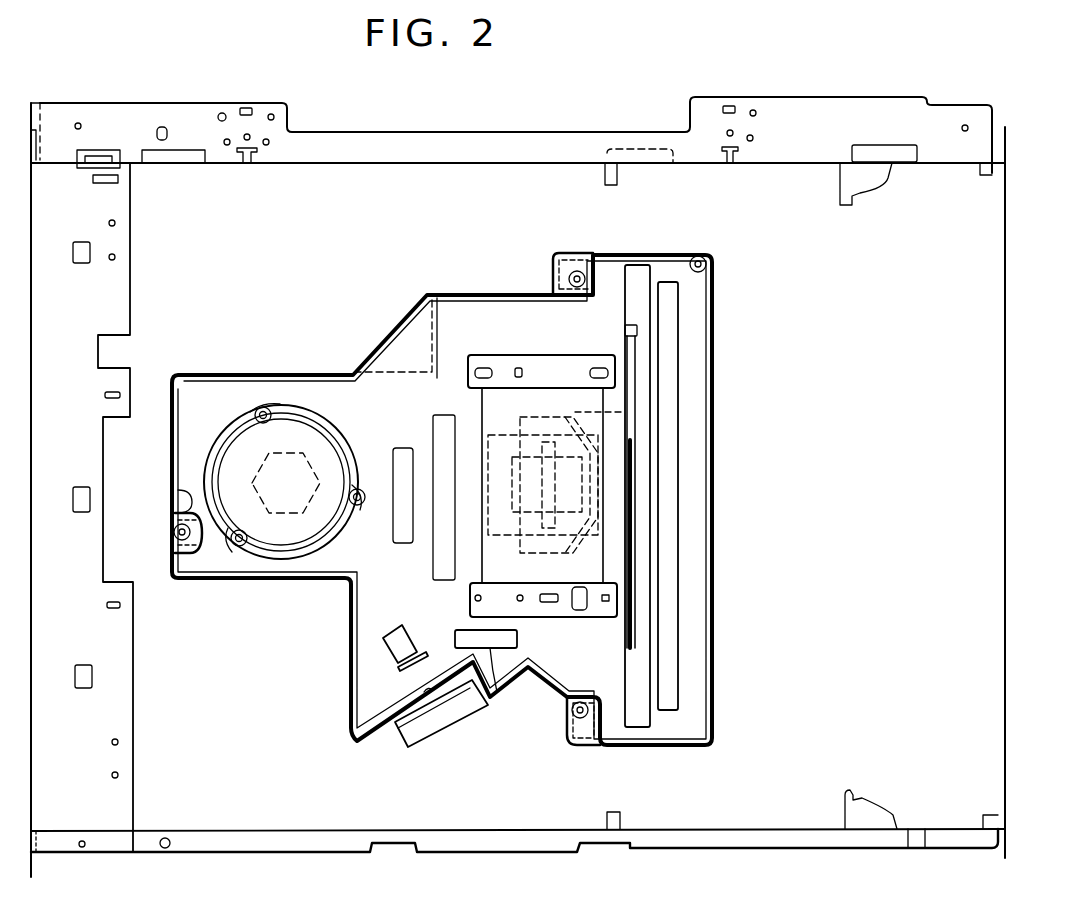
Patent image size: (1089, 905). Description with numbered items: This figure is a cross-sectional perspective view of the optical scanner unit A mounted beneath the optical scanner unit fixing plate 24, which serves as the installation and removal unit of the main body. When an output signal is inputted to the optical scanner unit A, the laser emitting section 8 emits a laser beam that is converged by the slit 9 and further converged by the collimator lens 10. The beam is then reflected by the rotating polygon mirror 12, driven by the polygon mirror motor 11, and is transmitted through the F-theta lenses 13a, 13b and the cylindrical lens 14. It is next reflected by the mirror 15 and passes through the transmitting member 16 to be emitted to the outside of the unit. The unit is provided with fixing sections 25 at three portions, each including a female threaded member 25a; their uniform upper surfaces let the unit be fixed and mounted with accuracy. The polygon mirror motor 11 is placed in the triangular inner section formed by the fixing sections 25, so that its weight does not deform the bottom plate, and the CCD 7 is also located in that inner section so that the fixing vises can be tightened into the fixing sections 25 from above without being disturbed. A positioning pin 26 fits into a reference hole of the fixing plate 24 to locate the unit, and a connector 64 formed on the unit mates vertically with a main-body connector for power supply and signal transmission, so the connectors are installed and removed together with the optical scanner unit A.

The optical scanner unit A is at (320, 330).
The CCD 7 is at (553, 622).
The laser emitting section 8 is at (393, 712).
The slit 9 is at (400, 674).
The collimator lens 10 is at (383, 645).
The polygon mirror motor 11 is at (260, 408).
The rotating polygon mirror 12 is at (283, 520).
The F-theta lens 13a is at (401, 446).
The F-theta lens 13b is at (440, 582).
The cylindrical lens 14 is at (626, 330).
The mirror 15 is at (679, 346).
The transmitting member 16 is at (640, 265).
The optical scanner unit fixing plate 24 is at (1007, 503).
The fixing section 25 is at (577, 270).
The female threaded member 25a is at (568, 280).
The positioning pin 26 is at (708, 262).
The connector 64 is at (497, 695).